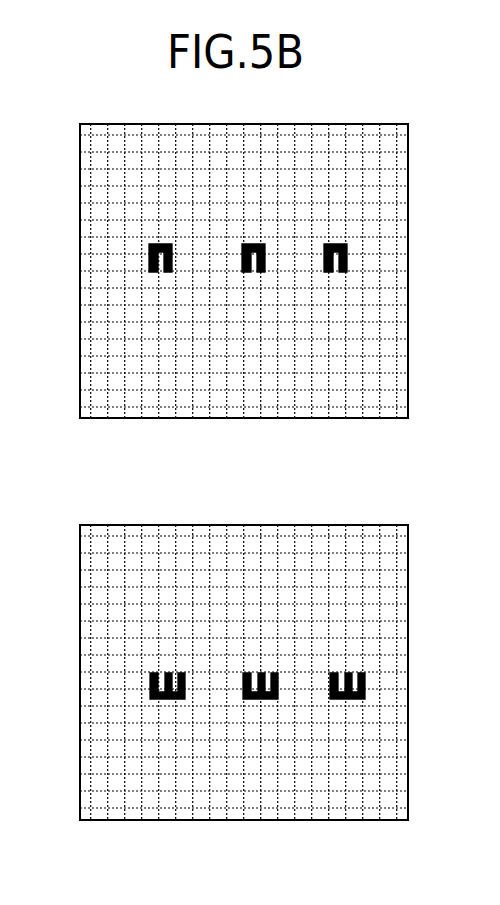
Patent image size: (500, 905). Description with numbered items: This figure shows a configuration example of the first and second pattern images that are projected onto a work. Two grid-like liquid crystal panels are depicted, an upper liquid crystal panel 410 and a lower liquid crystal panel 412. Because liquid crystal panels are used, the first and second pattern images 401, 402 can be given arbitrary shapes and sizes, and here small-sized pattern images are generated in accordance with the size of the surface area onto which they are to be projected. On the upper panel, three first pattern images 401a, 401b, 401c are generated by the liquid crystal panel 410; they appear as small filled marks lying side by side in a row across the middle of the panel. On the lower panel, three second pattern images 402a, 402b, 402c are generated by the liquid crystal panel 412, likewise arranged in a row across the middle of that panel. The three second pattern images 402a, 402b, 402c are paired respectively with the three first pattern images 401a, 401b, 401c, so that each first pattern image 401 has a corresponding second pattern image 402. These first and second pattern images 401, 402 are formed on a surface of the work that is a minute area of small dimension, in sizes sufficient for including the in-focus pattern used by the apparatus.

The liquid crystal panel 410 is at (341, 124).
The first pattern image 401 is at (347, 242).
The first pattern image 401a is at (410, 266).
The first pattern image 401b is at (250, 244).
The first pattern image 401c is at (150, 246).
The liquid crystal panel 412 is at (339, 525).
The second pattern image 402 is at (342, 700).
The second pattern image 402a is at (339, 783).
The second pattern image 402b is at (255, 700).
The second pattern image 402c is at (170, 700).